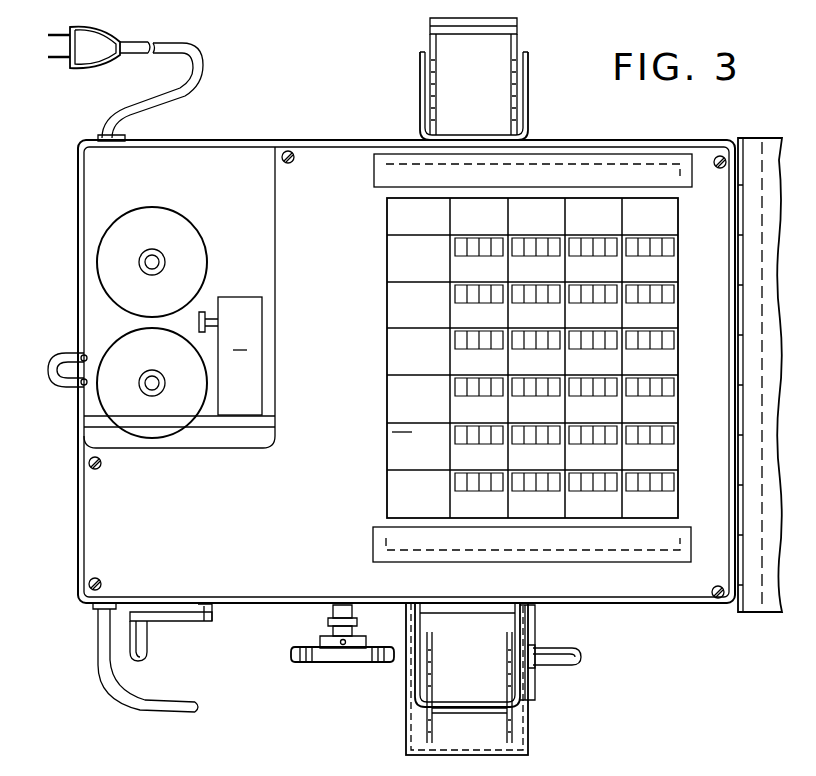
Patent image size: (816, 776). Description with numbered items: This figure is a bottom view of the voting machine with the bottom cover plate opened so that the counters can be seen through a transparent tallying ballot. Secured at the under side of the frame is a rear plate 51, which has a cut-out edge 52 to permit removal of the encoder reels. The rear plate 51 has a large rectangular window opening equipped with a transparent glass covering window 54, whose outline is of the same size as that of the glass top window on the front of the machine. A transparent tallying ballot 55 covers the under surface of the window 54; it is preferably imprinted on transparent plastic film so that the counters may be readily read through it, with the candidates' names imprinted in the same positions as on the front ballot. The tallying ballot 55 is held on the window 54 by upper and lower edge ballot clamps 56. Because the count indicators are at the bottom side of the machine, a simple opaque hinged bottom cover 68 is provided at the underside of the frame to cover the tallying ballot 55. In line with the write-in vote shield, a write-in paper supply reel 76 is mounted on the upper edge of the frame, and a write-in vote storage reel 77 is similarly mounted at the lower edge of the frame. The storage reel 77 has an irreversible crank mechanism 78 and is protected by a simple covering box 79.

The rear plate 51 is at (270, 530).
The cut-out edge 52 is at (275, 206).
The transparent glass covering window 54 is at (425, 556).
The transparent tallying ballot 55 is at (392, 432).
The ballot clamps 56 is at (374, 168).
The hinged bottom cover 68 is at (780, 612).
The write-in paper supply reel 76 is at (430, 32).
The write-in vote storage reel 77 is at (432, 731).
The irreversible crank mechanism 78 is at (578, 666).
The covering box 79 is at (528, 743).